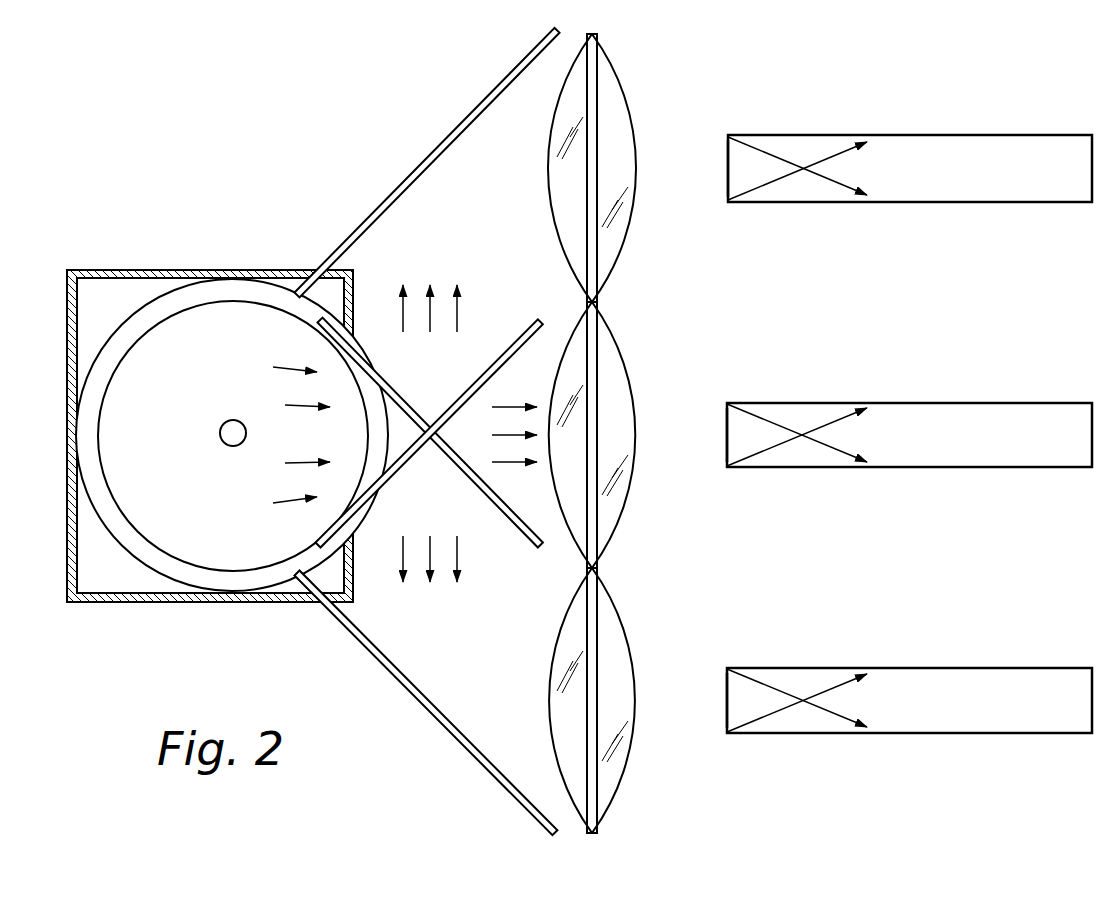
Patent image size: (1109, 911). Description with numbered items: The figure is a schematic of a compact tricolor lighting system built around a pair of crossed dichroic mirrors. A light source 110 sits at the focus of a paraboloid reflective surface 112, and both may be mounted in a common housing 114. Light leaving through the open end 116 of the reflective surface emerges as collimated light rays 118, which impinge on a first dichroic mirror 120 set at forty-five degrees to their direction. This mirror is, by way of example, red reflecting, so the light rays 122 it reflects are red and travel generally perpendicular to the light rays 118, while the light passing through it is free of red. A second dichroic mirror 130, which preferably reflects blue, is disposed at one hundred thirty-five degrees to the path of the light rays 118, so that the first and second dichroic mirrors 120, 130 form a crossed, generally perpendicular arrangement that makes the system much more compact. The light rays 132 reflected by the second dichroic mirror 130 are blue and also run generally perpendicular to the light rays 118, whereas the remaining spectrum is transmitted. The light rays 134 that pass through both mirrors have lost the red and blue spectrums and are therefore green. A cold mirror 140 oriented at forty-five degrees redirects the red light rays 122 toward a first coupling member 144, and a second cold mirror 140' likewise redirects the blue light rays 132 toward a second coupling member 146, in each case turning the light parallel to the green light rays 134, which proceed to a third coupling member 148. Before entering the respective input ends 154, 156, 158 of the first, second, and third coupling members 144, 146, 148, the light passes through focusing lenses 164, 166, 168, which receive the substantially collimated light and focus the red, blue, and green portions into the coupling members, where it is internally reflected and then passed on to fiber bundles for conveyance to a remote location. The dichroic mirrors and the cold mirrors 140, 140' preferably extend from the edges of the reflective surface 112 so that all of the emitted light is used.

The light source 110 is at (233, 446).
The paraboloid reflective surface 112 is at (128, 353).
The common housing 114 is at (157, 270).
The open end of the reflective surface 116 is at (367, 428).
The collimated light rays 118 is at (290, 368).
The first dichroic mirror 120 is at (520, 338).
The light rays reflected by first dichroic mirror 122 is at (430, 313).
The second dichroic mirror 130 is at (513, 523).
The light rays reflected from second dichroic mirror 132 is at (430, 558).
The transmitted light rays 134 is at (512, 436).
The cold mirror 140 is at (427, 163).
The cold mirror 140' is at (426, 703).
The first coupling member 144 is at (990, 135).
The second coupling member 146 is at (990, 668).
The third coupling member 148 is at (990, 403).
The input end of first coupling member 154 is at (728, 170).
The input end of second coupling member 156 is at (727, 703).
The input end of third coupling member 158 is at (727, 436).
The focusing lens 164 is at (610, 97).
The focusing lens 166 is at (610, 628).
The focusing lens 168 is at (610, 363).